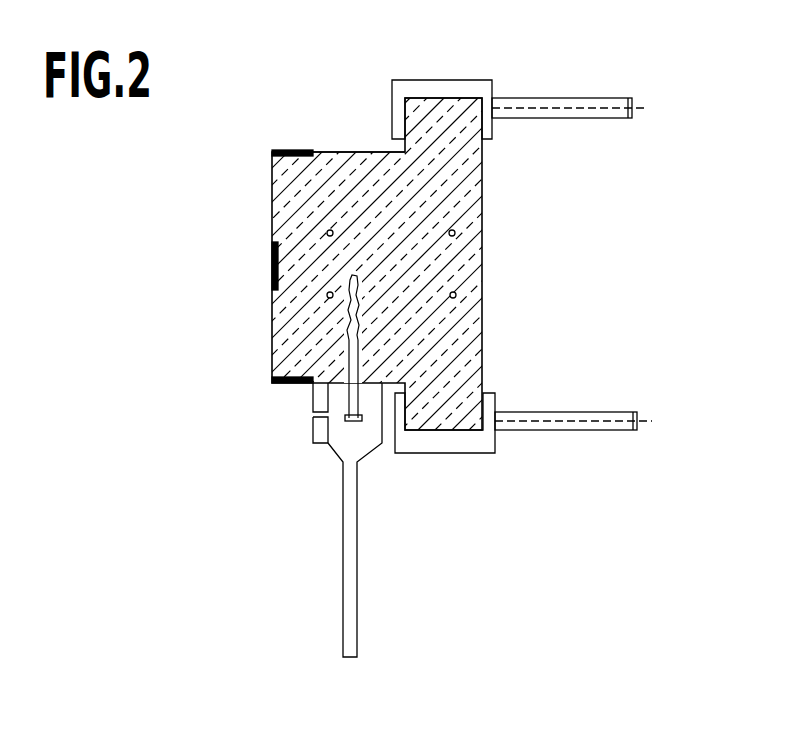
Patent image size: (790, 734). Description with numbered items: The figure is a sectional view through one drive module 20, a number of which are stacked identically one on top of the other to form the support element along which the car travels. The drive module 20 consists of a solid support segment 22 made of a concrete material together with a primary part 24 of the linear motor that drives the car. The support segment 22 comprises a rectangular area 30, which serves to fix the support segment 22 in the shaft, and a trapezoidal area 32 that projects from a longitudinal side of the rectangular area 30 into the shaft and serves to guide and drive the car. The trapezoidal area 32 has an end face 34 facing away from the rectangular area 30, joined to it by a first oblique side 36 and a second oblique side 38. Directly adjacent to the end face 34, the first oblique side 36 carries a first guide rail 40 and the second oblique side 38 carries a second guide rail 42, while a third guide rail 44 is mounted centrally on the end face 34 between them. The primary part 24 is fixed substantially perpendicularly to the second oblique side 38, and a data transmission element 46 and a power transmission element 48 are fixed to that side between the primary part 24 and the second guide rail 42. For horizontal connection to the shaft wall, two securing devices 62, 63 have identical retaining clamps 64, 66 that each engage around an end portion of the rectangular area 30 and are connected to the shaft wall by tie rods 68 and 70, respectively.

The drive module 20 is at (395, 333).
The support segment 22 is at (496, 222).
The primary part 24 is at (315, 520).
The rectangular area 30 is at (462, 165).
The trapezoidal area 32 is at (320, 192).
The end face 34 is at (272, 313).
The first oblique side 36 is at (330, 150).
The second oblique side 38 is at (390, 383).
The first guide rail 40 is at (295, 150).
The second guide rail 42 is at (290, 383).
The third guide rail 44 is at (272, 262).
The data transmission element 46 is at (320, 395).
The power transmission element 48 is at (320, 428).
The securing device 62 is at (520, 74).
The securing device 63 is at (526, 461).
The retaining clamp 64 is at (441, 440).
The retaining clamp 66 is at (445, 88).
The tie rod 68 is at (600, 430).
The tie rod 70 is at (577, 105).